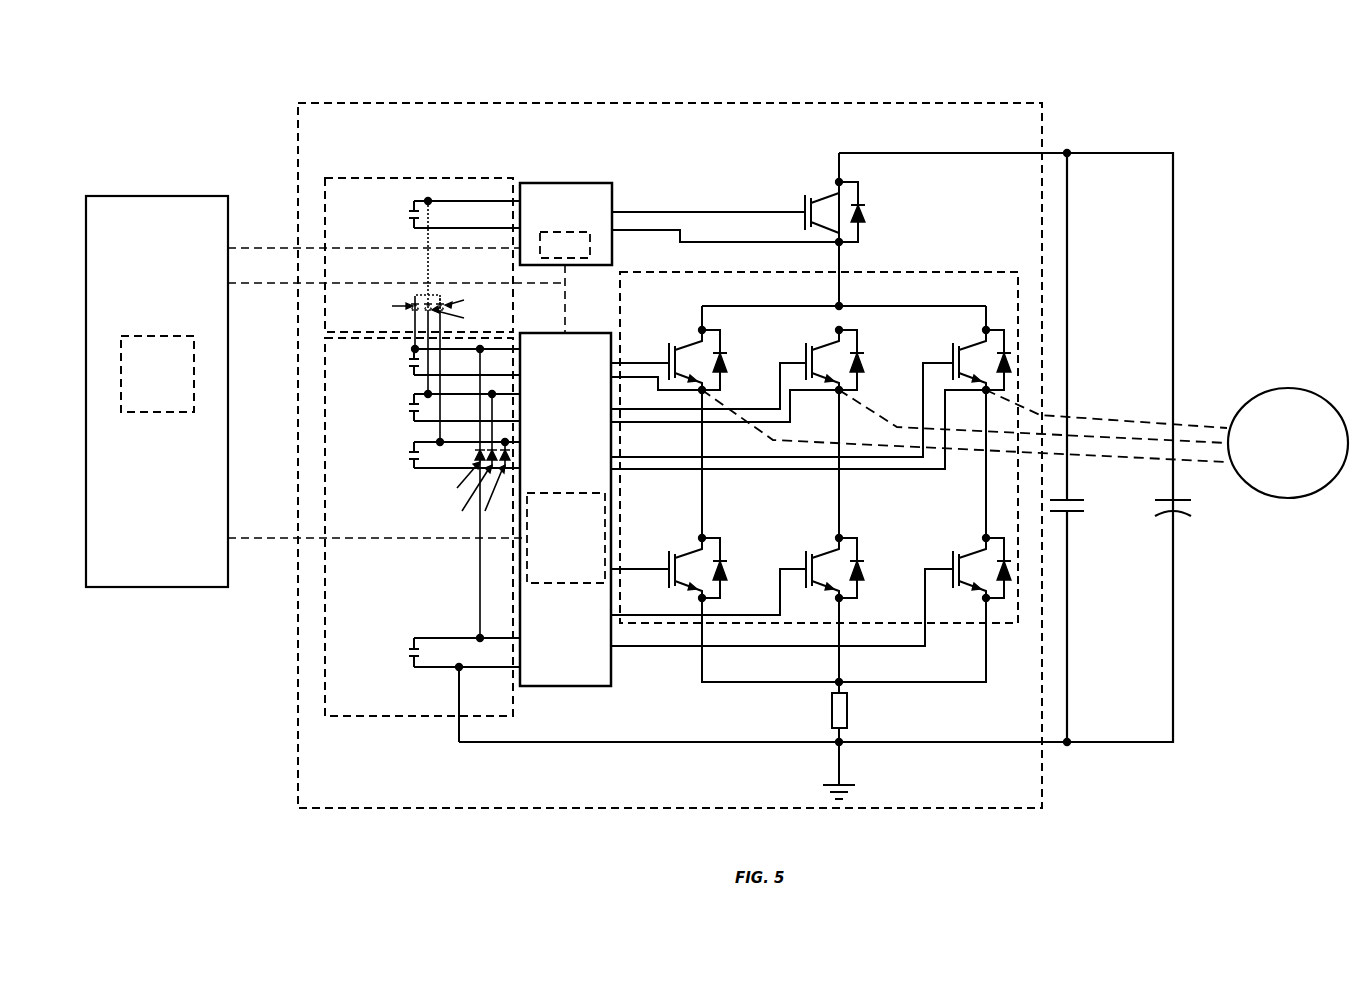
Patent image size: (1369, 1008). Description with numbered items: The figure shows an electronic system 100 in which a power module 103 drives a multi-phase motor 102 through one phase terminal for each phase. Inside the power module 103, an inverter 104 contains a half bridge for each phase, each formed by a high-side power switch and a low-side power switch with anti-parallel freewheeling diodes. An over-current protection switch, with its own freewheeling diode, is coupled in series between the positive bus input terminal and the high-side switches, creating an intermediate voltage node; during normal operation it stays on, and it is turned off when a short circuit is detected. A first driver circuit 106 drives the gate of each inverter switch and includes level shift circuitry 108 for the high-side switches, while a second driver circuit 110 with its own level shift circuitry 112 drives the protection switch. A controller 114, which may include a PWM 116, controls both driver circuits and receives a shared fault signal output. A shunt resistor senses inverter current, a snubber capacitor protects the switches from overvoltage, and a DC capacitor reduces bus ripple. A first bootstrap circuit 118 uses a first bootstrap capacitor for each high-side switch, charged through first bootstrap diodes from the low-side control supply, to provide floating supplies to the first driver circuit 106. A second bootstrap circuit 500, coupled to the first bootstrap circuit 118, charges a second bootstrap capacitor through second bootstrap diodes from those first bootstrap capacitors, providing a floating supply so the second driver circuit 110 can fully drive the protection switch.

The electronic system 100 is at (701, 424).
The motor 102 is at (1025, 443).
The power module 103 is at (775, 455).
The inverter 104 is at (819, 447).
The first driver circuit 106 is at (565, 509).
The level shift circuitry 108 is at (566, 538).
The second driver circuit 110 is at (566, 224).
The level shift circuitry 112 is at (565, 245).
The controller 114 is at (157, 391).
The PWM 116 is at (157, 374).
The first bootstrap circuit 118 is at (422, 526).
The second bootstrap circuit 500 is at (422, 255).